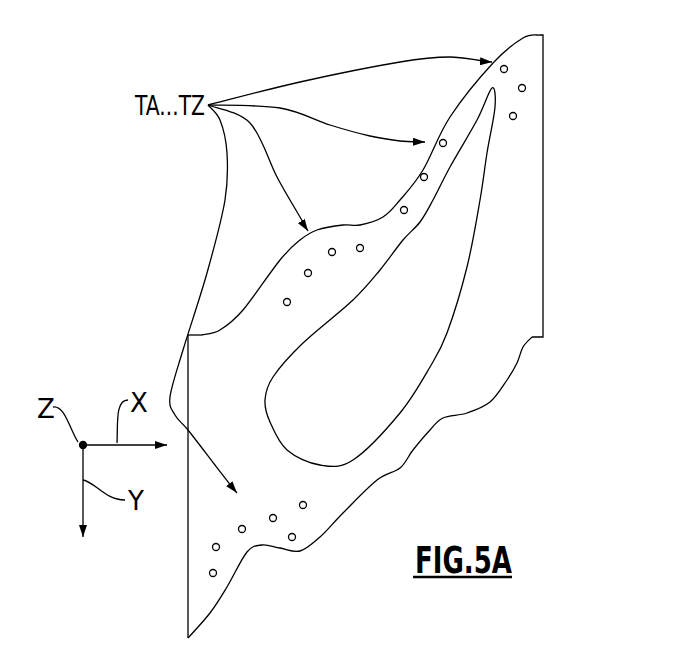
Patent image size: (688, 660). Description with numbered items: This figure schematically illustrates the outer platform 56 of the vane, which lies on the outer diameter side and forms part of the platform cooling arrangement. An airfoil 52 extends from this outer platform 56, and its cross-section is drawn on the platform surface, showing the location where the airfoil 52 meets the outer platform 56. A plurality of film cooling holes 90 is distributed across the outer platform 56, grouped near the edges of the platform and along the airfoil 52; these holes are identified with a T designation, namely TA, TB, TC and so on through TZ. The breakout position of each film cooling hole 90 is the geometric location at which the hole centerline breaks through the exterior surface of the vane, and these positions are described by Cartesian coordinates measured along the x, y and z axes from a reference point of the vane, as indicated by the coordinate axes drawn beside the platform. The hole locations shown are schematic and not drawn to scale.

The film cooling holes 90 is at (508, 68).
The airfoil 52 is at (438, 343).
The outer platform 56 is at (492, 402).